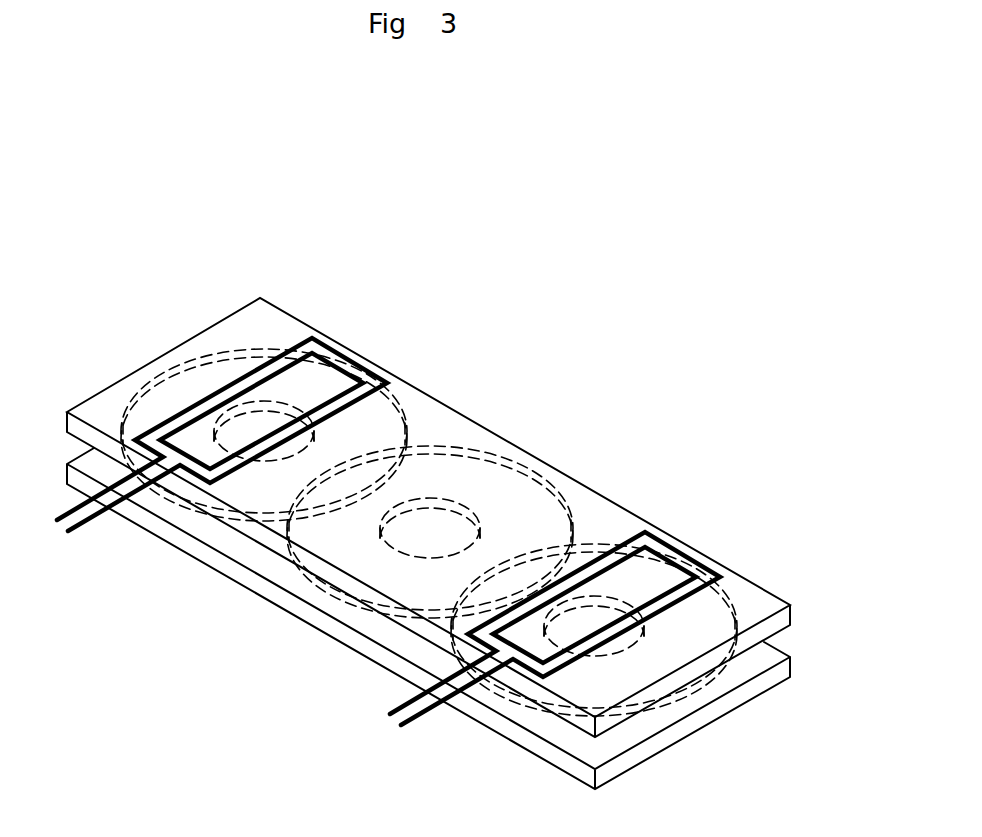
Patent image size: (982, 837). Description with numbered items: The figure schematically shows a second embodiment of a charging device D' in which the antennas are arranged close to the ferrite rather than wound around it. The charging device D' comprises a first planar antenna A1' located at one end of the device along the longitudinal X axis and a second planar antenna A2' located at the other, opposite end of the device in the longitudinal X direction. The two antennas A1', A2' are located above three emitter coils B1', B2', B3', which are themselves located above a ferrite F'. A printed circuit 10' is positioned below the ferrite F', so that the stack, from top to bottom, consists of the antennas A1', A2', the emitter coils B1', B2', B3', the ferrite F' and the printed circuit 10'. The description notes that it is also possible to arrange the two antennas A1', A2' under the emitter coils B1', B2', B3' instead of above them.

The charging device D' is at (464, 503).
The printed circuit 10' is at (469, 517).
The ferrite F' is at (433, 618).
The first planar antenna A1' is at (254, 396).
The second planar antenna A2' is at (588, 591).
The emitter coil B1' is at (313, 428).
The emitter coil B2' is at (480, 524).
The emitter coil B3' is at (647, 622).